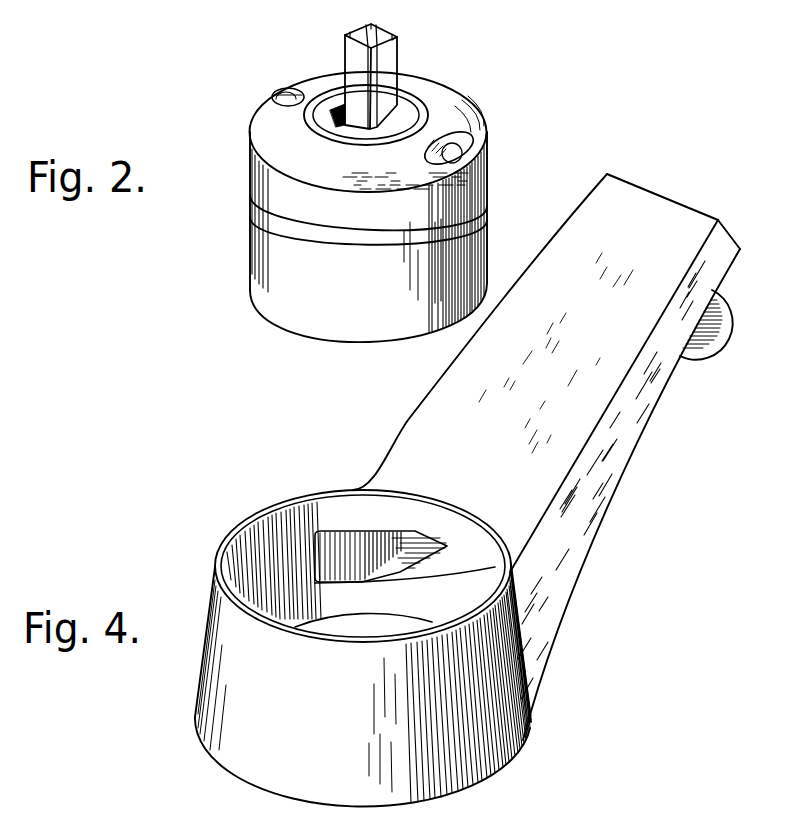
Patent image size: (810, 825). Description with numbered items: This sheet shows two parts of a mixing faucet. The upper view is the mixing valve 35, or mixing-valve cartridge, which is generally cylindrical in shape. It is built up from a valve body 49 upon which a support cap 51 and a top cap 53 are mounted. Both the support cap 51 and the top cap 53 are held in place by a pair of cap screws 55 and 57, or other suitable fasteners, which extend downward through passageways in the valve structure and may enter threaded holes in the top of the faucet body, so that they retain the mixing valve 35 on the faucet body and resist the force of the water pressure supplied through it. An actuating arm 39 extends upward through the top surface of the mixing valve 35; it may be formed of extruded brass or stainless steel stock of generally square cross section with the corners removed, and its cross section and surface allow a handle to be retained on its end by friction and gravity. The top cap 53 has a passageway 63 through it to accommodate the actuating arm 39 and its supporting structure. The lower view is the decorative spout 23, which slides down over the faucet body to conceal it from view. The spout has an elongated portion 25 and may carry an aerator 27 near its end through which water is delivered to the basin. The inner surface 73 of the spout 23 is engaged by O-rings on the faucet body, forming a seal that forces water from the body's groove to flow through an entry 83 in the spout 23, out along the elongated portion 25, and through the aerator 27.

In FIG. 4, the spout 23 is at (540, 675).
In FIG. 4, the elongated portion 25 is at (652, 192).
In FIG. 4, the aerator 27 is at (722, 330).
In FIG. 4, the inner surface 73 is at (260, 520).
In FIG. 4, the entry 83 is at (335, 530).
In FIG. 2, the mixing valve 35 is at (452, 85).
In FIG. 2, the actuating arm 39 is at (387, 32).
In FIG. 2, the valve body 49 is at (248, 252).
In FIG. 2, the support cap 51 is at (272, 213).
In FIG. 2, the top cap 53 is at (477, 103).
In FIG. 2, the cap screw 55 is at (280, 90).
In FIG. 2, the cap screw 57 is at (470, 162).
In FIG. 2, the passageway 63 is at (307, 115).